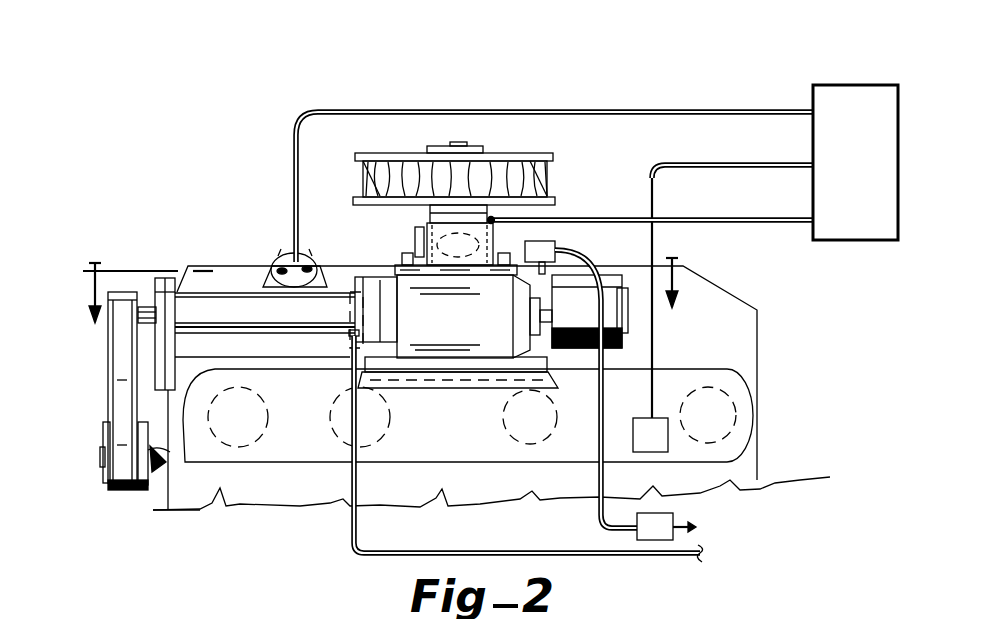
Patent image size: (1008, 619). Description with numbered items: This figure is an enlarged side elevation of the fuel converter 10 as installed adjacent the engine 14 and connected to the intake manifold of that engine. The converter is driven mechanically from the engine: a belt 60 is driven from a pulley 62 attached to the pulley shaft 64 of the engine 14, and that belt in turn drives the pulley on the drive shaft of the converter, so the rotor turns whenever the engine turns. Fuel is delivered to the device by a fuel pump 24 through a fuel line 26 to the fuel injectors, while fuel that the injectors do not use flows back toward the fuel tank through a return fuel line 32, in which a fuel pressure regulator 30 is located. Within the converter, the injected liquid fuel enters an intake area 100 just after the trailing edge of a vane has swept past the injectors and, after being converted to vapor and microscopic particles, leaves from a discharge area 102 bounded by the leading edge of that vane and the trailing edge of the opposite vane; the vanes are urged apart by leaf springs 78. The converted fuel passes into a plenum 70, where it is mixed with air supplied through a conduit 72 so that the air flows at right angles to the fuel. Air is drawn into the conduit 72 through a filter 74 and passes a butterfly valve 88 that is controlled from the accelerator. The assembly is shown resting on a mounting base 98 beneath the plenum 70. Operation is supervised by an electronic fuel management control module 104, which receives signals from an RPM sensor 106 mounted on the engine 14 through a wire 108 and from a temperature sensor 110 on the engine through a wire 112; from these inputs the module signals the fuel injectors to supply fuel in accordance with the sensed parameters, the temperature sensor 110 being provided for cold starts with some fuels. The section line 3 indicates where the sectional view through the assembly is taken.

The section line 3- 3 is at (377, 295).
The fuel converter 10 is at (420, 395).
The engine 14 is at (253, 493).
The fuel pump 24 is at (640, 535).
The fuel line 26 is at (583, 252).
The fuel pressure regulator 30 is at (543, 241).
The return fuel line 32 is at (353, 553).
The belt 60 is at (120, 357).
The pulley 62 is at (107, 483).
The pulley shaft 64 is at (163, 475).
The plenum 70 is at (470, 330).
The conduit 72 is at (420, 252).
The filter 74 is at (405, 153).
The leaf springs 78 is at (420, 230).
The butterfly valve 88 is at (458, 240).
The mounting base plate 98 is at (373, 372).
The intake area 100 is at (492, 219).
The discharge area 102 is at (757, 227).
The electronic fuel management control module 104 is at (860, 220).
The RPM sensor 106 is at (277, 260).
The wire 108 is at (493, 110).
The temperature sensor 110 is at (670, 433).
The wire 112 is at (707, 163).